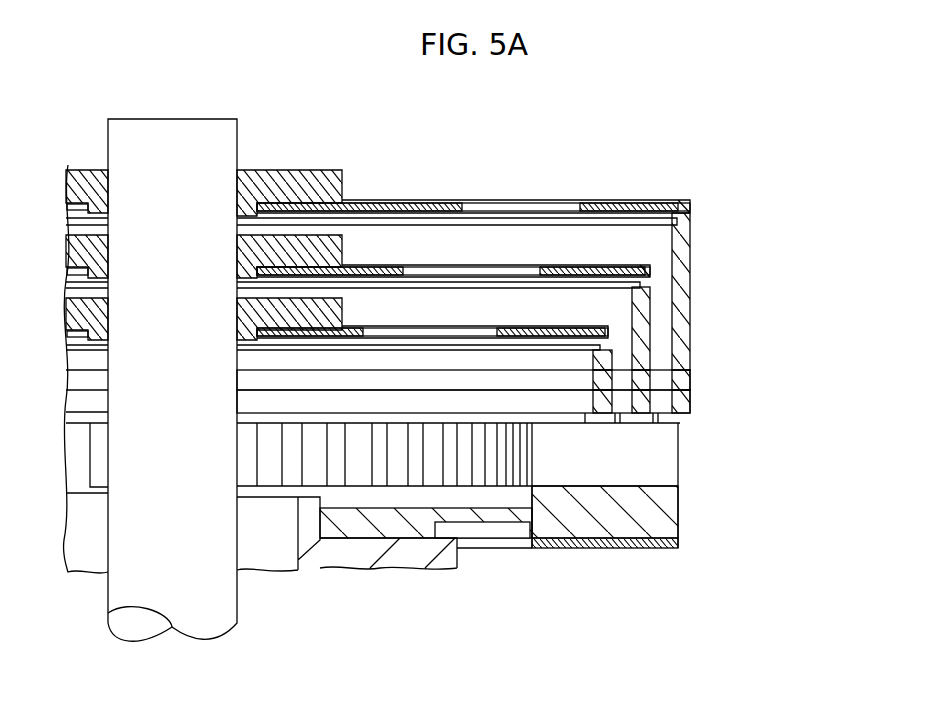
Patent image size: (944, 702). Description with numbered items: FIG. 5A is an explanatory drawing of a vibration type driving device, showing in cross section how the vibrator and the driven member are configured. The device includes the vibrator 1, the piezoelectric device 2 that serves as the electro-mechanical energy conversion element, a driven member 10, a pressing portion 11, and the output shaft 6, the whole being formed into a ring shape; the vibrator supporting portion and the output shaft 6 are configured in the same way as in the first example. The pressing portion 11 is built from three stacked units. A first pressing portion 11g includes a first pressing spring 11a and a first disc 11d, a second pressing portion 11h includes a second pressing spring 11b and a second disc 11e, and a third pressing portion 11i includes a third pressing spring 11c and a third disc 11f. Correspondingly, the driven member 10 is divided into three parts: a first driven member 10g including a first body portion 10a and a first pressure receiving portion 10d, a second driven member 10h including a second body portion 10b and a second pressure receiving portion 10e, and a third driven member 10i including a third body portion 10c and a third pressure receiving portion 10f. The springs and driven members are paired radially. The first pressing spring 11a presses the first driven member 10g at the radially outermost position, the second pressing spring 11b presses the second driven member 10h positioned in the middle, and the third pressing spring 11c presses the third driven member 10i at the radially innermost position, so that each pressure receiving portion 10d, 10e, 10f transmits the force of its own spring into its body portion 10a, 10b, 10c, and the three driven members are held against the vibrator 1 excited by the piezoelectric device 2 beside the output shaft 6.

The vibrator 1 is at (588, 522).
The piezoelectric device 2 is at (545, 548).
The output shaft 6 is at (130, 588).
The driven member 10 is at (750, 406).
The first body portion 10a is at (690, 404).
The second body portion 10b is at (652, 380).
The third body portion 10c is at (605, 400).
The first pressure receiving portion 10d is at (685, 332).
The second pressure receiving portion 10e is at (640, 360).
The third pressure receiving portion 10f is at (612, 358).
The first driven member 10g is at (757, 319).
The second driven member 10h is at (737, 399).
The third driven member 10i is at (714, 473).
The pressing portion 11 is at (486, 197).
The first pressing spring 11a is at (452, 209).
The second pressing spring 11b is at (467, 271).
The third pressing spring 11c is at (500, 326).
The first disc 11d is at (342, 170).
The second disc 11e is at (338, 250).
The third disc 11f is at (340, 310).
The first pressing portion 11g is at (454, 138).
The second pressing portion 11h is at (454, 209).
The third pressing portion 11i is at (450, 283).